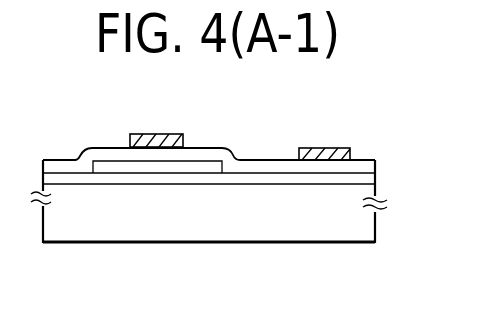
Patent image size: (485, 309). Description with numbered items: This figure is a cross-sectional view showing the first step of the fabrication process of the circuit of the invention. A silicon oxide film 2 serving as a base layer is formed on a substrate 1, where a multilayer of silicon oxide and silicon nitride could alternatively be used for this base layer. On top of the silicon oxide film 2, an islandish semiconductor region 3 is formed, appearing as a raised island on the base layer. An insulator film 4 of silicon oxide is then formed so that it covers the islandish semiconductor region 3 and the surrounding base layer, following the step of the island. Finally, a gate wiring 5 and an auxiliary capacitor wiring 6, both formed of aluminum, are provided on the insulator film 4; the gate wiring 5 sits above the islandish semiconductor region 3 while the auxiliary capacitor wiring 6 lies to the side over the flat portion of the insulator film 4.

The substrate 1 is at (264, 230).
The silicon oxide film 2 is at (202, 177).
The islandish semiconductor region 3 is at (140, 166).
The insulator film 4 is at (256, 158).
The gate wiring 5 is at (177, 133).
The auxiliary capacitor wiring 6 is at (331, 147).